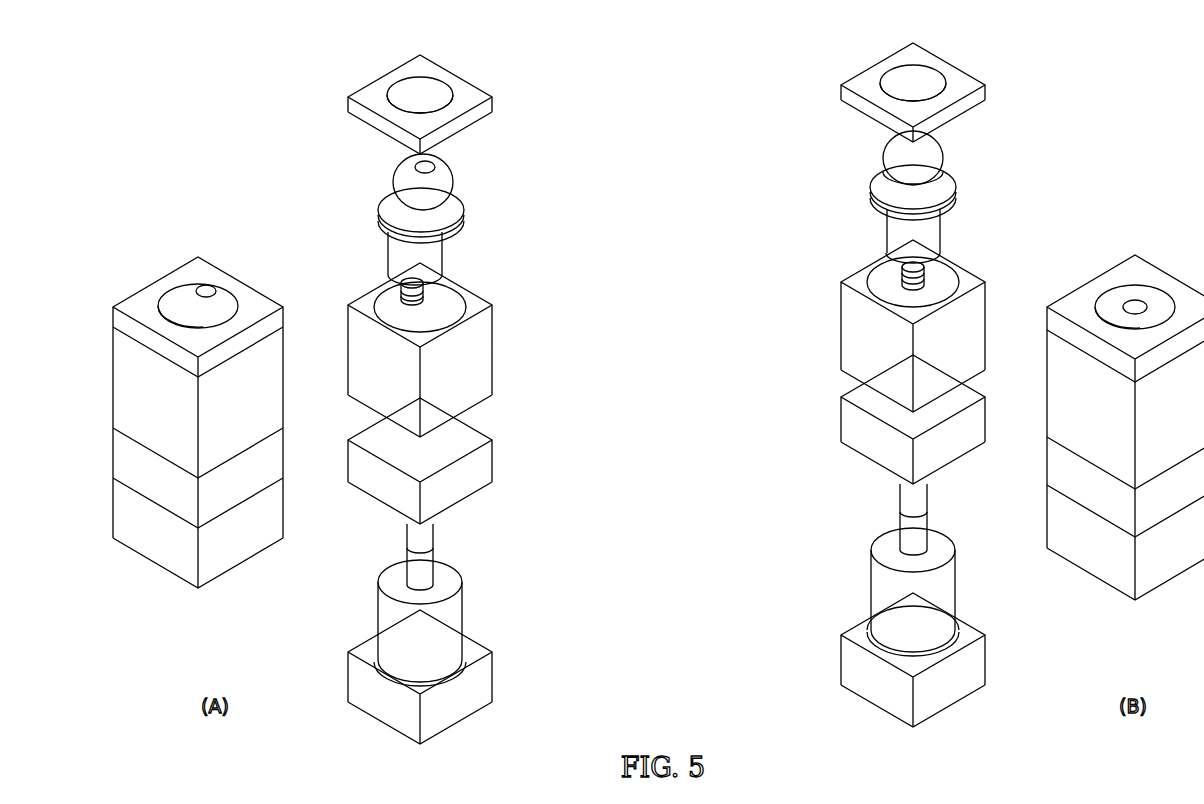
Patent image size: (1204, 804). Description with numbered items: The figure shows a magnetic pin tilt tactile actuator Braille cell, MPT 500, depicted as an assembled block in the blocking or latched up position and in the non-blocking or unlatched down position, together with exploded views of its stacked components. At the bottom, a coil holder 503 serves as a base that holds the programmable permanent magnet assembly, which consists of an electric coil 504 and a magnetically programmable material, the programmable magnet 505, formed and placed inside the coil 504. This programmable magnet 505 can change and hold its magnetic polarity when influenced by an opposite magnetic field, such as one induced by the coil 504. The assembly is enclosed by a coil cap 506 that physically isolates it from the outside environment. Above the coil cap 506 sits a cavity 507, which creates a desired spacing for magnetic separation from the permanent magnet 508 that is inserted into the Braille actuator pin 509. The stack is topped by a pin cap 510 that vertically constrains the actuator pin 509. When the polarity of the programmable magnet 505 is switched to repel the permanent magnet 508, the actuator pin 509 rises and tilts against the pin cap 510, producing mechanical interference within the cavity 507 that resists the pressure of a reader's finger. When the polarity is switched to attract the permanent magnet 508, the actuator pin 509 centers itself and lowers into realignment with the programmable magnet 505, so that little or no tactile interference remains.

The magnetic pin tilt tactile actuator Braille cell 500 is at (198, 415).
The coil holder 503 is at (838, 675).
The electric coil 504 is at (862, 588).
The programmable magnet 505 is at (455, 545).
The coil cap 506 is at (508, 450).
The cavity 507 is at (836, 347).
The permanent magnet 508 is at (437, 283).
The actuator pin 509 is at (863, 186).
The pin cap 510 is at (500, 97).